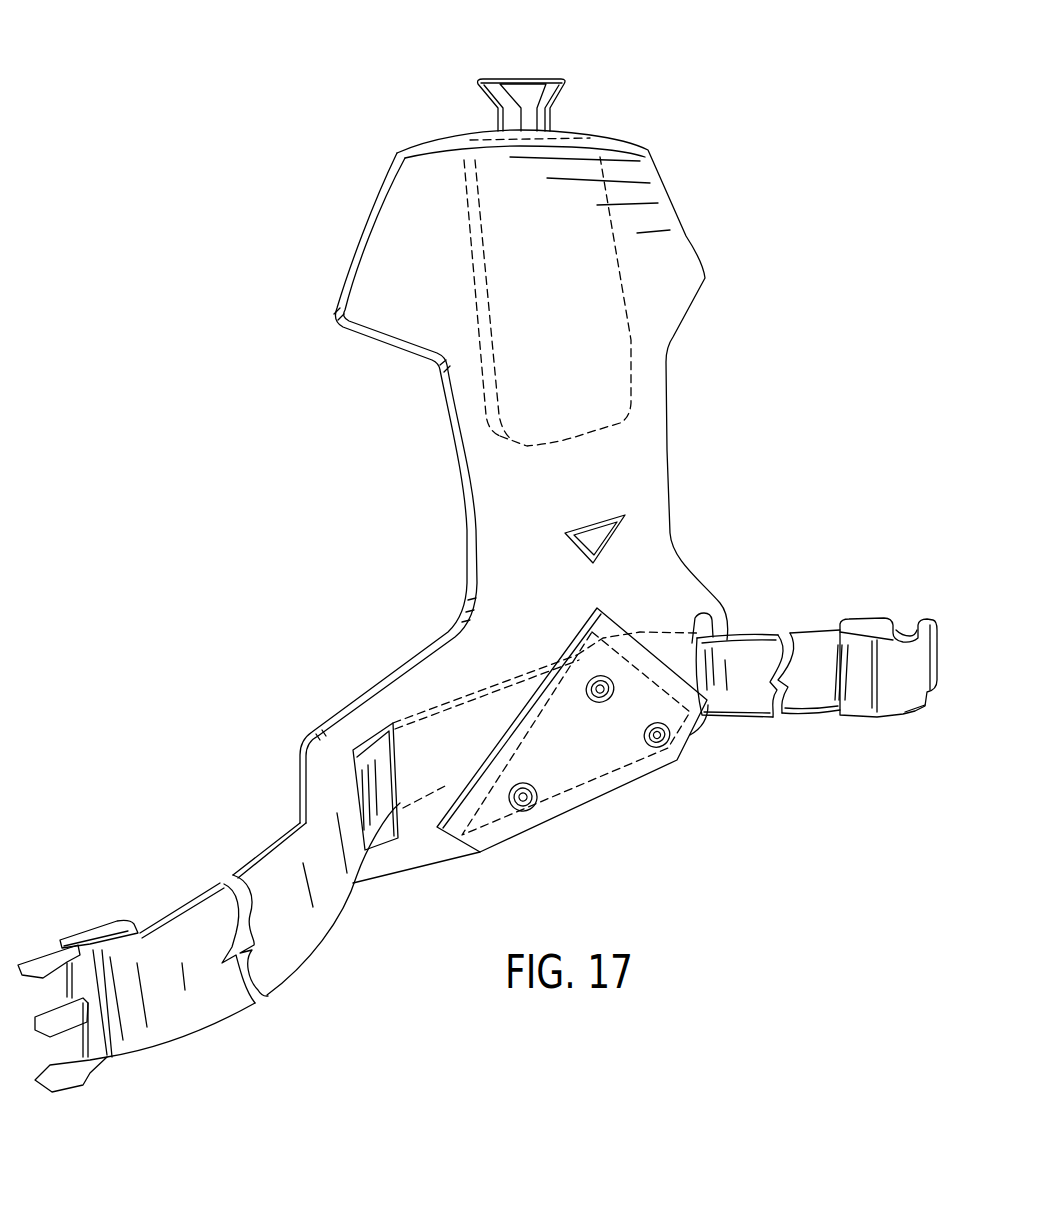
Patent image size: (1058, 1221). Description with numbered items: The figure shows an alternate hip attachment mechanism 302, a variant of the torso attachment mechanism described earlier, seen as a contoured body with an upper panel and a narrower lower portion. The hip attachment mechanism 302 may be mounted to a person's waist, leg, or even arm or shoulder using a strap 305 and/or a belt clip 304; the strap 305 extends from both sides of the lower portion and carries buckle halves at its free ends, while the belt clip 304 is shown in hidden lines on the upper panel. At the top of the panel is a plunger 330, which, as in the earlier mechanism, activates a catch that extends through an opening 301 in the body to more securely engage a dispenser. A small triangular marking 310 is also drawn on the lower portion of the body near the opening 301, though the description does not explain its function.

The plunger 330 is at (560, 120).
The hip attachment mechanism 302 is at (676, 218).
The belt clip 304 is at (633, 378).
The opening 301 is at (610, 547).
The indicator triangle 310 is at (590, 537).
The strap 305 is at (815, 630).